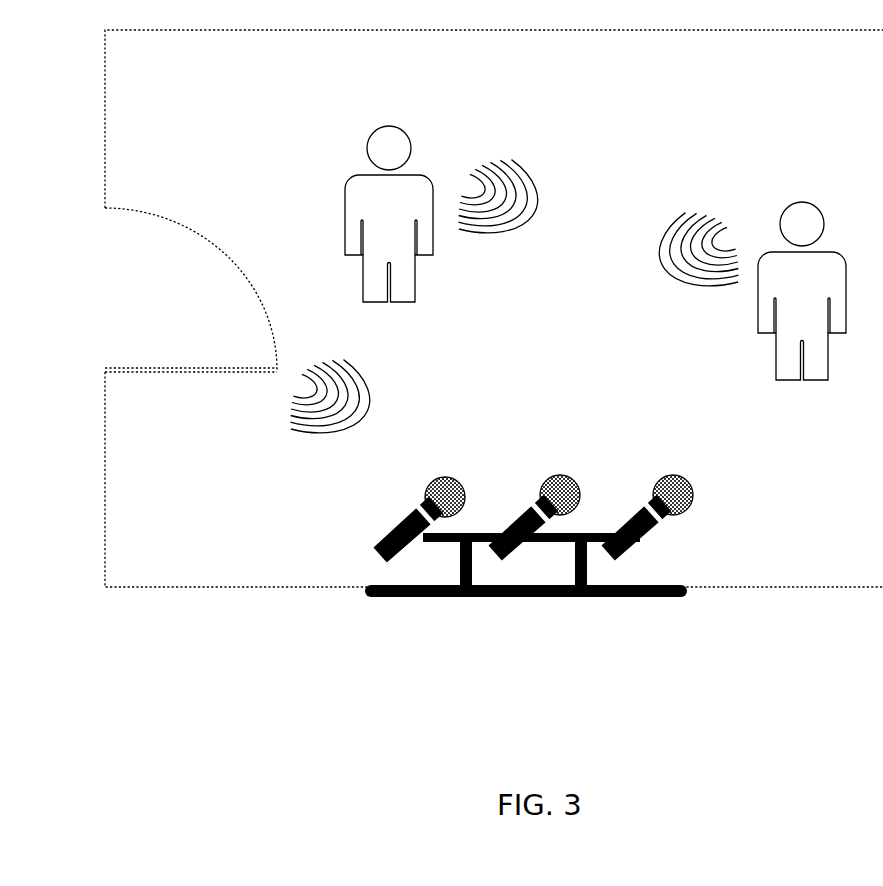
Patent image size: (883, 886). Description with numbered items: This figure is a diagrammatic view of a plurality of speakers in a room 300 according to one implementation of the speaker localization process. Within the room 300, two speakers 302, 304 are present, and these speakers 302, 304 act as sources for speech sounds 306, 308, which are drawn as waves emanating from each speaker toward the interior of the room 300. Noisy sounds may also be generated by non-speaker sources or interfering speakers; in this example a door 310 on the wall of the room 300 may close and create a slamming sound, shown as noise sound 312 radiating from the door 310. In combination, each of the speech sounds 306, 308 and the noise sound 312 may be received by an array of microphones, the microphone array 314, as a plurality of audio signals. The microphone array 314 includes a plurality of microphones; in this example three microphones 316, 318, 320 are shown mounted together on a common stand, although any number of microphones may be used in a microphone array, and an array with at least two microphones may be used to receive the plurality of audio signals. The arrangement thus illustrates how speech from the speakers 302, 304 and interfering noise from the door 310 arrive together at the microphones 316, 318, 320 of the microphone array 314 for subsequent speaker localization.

The room 300 is at (118, 588).
The speaker 302 is at (388, 116).
The speaker 304 is at (804, 190).
The speech sound 306 is at (540, 165).
The speech sound 308 is at (674, 310).
The door 310 is at (240, 372).
The noise sound 312 is at (370, 365).
The microphone array 314 is at (378, 591).
The microphone 316 is at (446, 476).
The microphone 318 is at (568, 475).
The microphone 320 is at (681, 476).